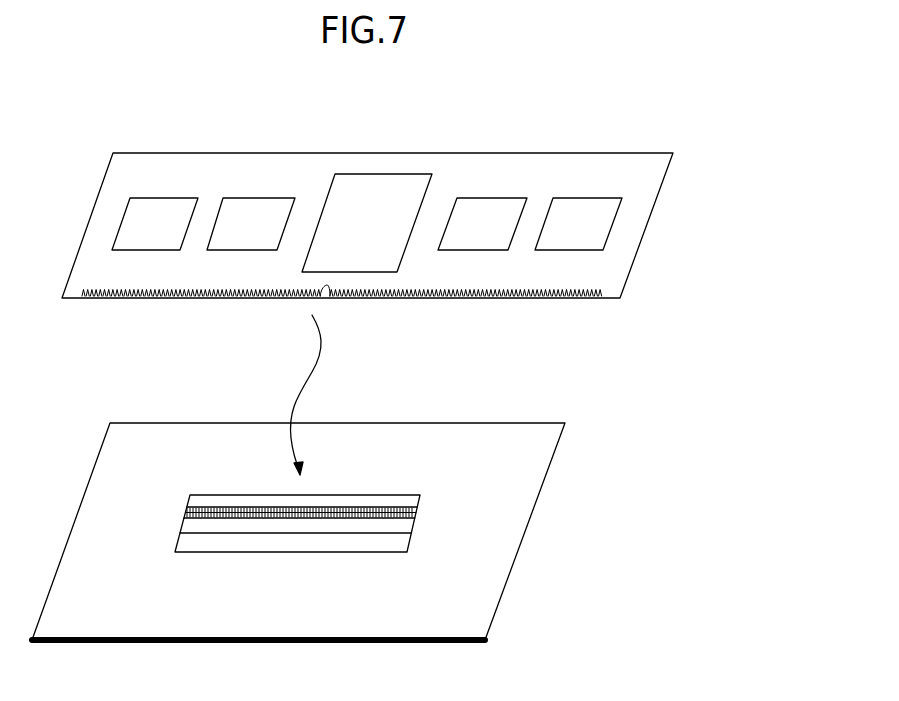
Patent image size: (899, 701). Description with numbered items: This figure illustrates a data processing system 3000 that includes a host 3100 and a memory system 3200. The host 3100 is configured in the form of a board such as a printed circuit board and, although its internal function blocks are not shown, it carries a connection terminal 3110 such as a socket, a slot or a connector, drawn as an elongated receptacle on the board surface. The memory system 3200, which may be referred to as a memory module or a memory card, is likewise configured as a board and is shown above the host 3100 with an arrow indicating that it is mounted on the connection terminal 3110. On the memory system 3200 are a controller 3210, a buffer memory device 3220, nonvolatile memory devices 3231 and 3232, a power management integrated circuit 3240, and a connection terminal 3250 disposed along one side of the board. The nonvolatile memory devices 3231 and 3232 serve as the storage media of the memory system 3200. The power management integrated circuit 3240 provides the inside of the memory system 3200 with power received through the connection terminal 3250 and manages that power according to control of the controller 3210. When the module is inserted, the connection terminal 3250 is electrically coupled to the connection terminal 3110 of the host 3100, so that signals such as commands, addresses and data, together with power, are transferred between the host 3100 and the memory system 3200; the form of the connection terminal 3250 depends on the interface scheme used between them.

The data processing system 3000 is at (216, 118).
The memory system 3200 is at (367, 248).
The power management integrated circuit 3240 is at (155, 224).
The buffer memory device 3220 is at (251, 224).
The controller 3210 is at (367, 223).
The nonvolatile memory device 3231 is at (482, 224).
The nonvolatile memory device 3232 is at (578, 224).
The connection terminal 3250 is at (100, 300).
The host 3100 is at (298, 531).
The connection terminal 3110 is at (437, 490).